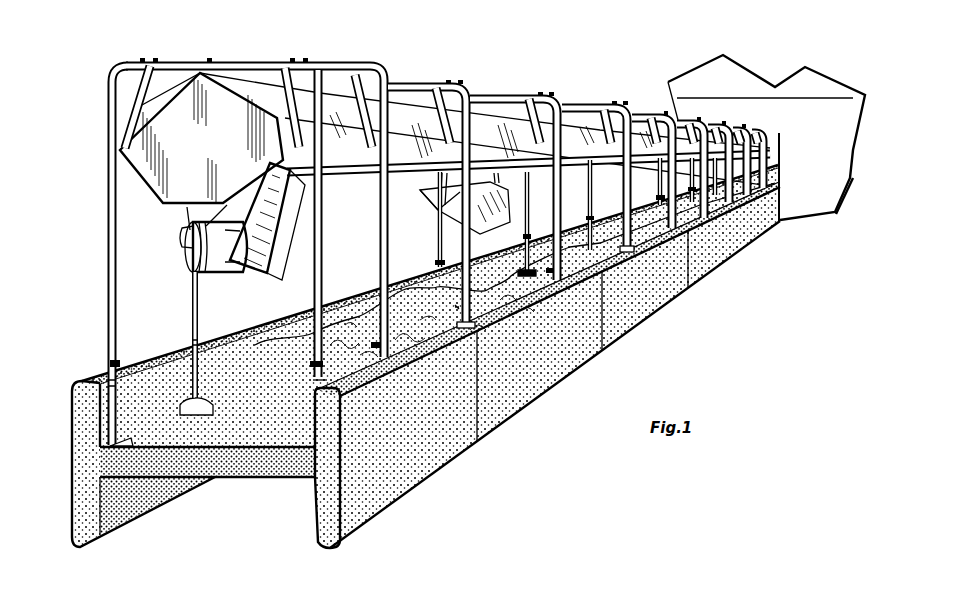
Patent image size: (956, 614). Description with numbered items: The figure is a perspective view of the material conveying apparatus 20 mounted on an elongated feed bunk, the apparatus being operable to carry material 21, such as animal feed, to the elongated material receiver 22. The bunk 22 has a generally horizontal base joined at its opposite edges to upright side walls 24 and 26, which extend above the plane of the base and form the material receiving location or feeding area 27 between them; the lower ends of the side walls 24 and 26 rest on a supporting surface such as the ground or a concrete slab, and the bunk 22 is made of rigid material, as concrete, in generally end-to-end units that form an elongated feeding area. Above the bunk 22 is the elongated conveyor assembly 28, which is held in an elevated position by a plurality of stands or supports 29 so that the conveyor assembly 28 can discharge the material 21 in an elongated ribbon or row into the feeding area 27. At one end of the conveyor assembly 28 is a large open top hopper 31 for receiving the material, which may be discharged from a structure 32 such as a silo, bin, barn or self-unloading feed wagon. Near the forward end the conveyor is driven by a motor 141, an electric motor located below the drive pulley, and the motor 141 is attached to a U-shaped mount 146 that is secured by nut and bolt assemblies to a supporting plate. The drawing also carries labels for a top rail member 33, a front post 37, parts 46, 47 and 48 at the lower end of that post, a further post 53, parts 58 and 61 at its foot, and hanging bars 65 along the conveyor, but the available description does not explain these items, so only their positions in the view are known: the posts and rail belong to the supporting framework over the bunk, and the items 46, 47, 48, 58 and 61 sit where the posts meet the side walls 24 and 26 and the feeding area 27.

The material conveying apparatus 20 is at (571, 60).
The material 21 is at (352, 330).
The elongated material receiver 22 is at (78, 548).
The side wall 24 is at (82, 393).
The side wall 26 is at (335, 431).
The feeding area 27 is at (430, 321).
The conveyor assembly 28 is at (405, 102).
The stands or supports 29 is at (412, 235).
The open top hopper 31 is at (773, 133).
The structure 32 is at (827, 193).
The top rail 33 is at (176, 62).
The front post 37 is at (116, 256).
The post sleeve 46 is at (118, 397).
The post foot bracket 47 is at (133, 437).
The clamp 48 is at (117, 362).
The post 53 is at (320, 248).
The post socket 58 is at (307, 403).
The clamp 61 is at (312, 367).
The hanging bar 65 is at (283, 103).
The motor 141 is at (210, 243).
The U-shaped mount 146 is at (208, 149).